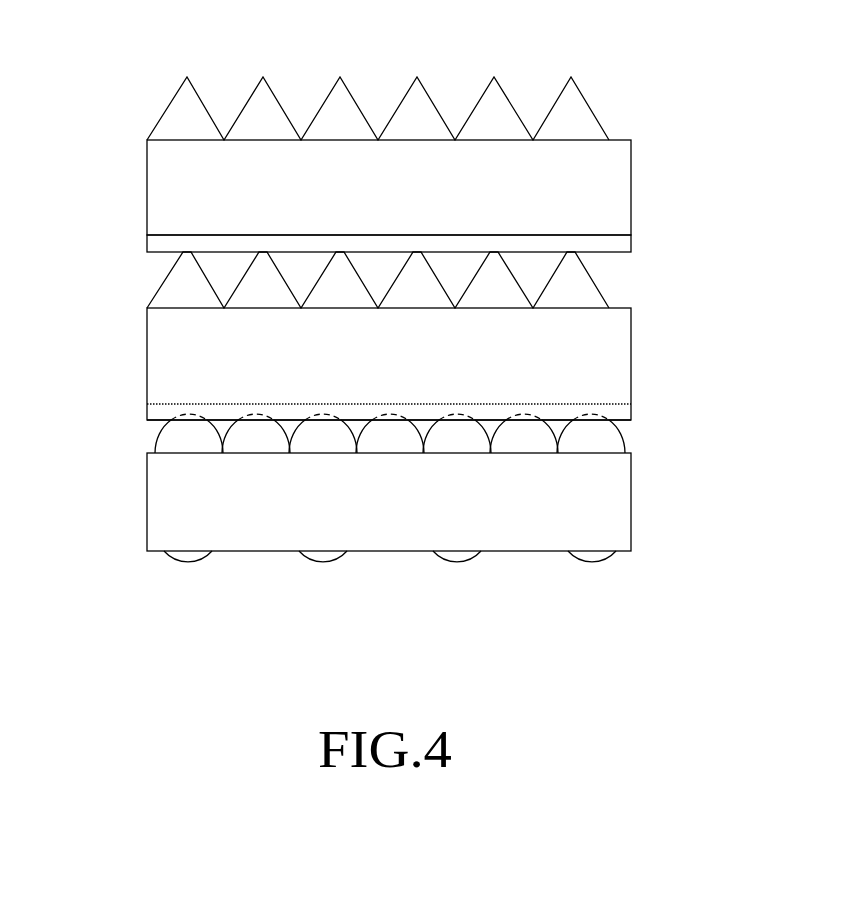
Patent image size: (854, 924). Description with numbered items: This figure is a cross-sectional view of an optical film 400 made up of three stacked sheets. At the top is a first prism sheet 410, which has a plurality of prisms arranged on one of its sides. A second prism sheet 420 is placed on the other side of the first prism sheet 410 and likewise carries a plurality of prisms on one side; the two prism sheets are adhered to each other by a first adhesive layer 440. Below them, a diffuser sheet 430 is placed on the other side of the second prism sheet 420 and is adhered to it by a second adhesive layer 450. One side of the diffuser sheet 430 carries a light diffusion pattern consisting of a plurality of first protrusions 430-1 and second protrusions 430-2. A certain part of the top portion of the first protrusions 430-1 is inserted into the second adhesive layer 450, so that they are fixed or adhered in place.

The optical film 400 is at (400, 33).
The first prism sheet 410 is at (631, 173).
The second prism sheet 420 is at (631, 362).
The diffuser sheet 430 is at (631, 510).
The first protrusions 430-1 is at (623, 438).
The second protrusions 430-2 is at (612, 561).
The first adhesive layer 440 is at (155, 245).
The second adhesive layer 450 is at (150, 408).